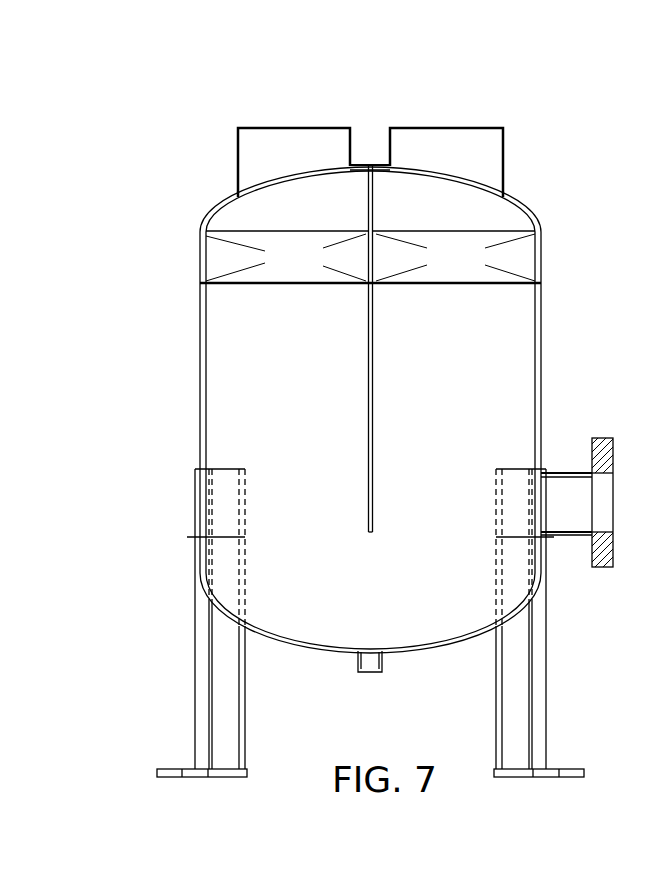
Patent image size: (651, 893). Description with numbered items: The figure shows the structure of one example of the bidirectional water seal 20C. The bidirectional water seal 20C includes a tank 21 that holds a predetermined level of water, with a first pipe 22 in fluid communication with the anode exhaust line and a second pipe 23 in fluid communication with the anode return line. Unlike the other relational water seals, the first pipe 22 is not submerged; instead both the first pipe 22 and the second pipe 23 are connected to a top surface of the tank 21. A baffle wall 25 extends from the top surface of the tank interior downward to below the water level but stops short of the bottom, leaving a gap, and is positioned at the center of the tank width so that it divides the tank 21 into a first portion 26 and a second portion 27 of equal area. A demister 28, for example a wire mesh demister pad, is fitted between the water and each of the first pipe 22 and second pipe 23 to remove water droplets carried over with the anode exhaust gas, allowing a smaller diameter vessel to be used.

The bidirectional water seal 20C is at (150, 213).
The tank 21 is at (200, 403).
The first pipe 22 is at (292, 128).
The second pipe 23 is at (430, 128).
The baffle wall 25 is at (372, 324).
The first chamber 26 is at (292, 381).
The second chamber 27 is at (457, 381).
The demister 28 is at (520, 260).